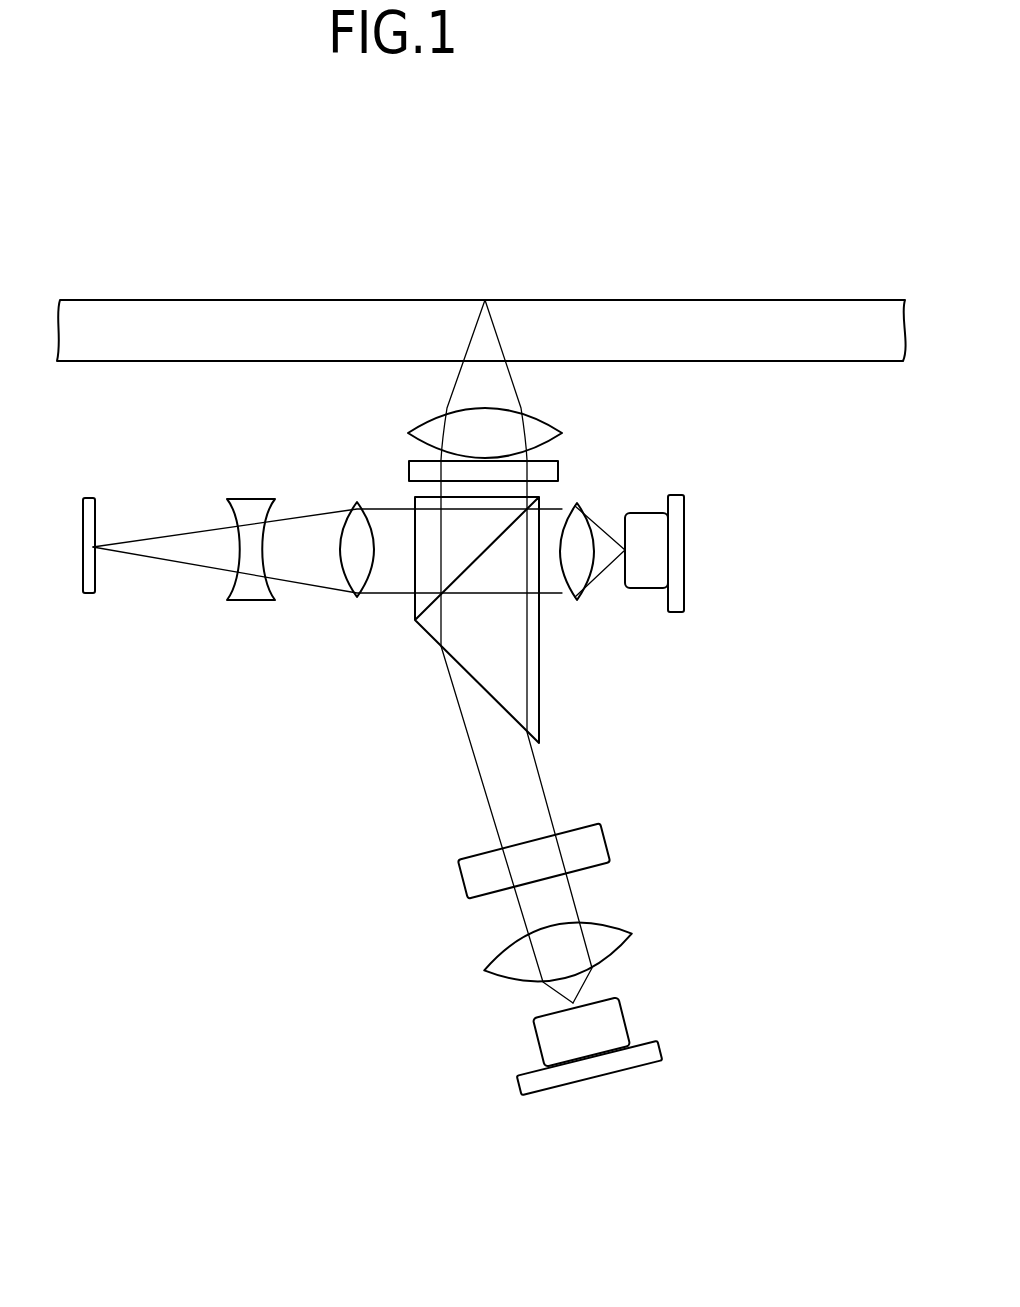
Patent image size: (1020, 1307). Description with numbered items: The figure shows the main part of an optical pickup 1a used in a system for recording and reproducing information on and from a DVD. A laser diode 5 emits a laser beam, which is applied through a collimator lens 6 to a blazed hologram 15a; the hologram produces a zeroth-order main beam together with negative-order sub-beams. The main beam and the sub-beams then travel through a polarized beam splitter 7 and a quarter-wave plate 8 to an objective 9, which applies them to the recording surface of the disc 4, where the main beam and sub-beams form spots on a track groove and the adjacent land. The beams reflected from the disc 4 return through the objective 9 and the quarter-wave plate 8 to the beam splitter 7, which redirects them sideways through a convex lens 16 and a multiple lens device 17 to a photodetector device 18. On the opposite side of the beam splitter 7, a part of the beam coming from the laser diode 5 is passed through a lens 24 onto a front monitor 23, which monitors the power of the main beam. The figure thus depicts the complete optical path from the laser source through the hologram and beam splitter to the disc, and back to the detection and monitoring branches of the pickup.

The optical pickup 1a is at (675, 861).
The disc 4 is at (423, 305).
The laser diode 5 is at (617, 1023).
The collimator lens 6 is at (518, 975).
The polarized beam splitter 7 is at (538, 690).
The quarter-wave plate 8 is at (550, 462).
The objective 9 is at (555, 425).
The blazed hologram 15a is at (608, 845).
The convex lens 16 is at (355, 500).
The multiple lens device 17 is at (255, 510).
The photodetector device 18 is at (88, 497).
The front monitor 23 is at (680, 575).
The lens 24 is at (580, 570).